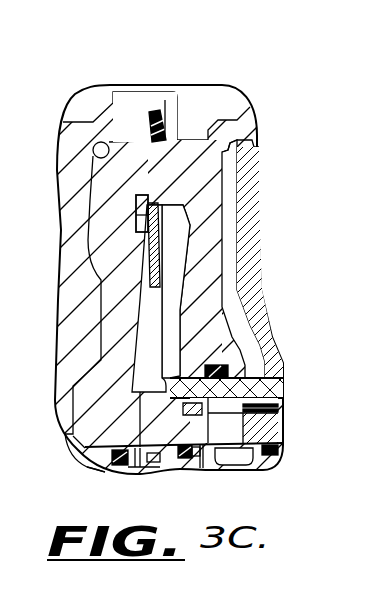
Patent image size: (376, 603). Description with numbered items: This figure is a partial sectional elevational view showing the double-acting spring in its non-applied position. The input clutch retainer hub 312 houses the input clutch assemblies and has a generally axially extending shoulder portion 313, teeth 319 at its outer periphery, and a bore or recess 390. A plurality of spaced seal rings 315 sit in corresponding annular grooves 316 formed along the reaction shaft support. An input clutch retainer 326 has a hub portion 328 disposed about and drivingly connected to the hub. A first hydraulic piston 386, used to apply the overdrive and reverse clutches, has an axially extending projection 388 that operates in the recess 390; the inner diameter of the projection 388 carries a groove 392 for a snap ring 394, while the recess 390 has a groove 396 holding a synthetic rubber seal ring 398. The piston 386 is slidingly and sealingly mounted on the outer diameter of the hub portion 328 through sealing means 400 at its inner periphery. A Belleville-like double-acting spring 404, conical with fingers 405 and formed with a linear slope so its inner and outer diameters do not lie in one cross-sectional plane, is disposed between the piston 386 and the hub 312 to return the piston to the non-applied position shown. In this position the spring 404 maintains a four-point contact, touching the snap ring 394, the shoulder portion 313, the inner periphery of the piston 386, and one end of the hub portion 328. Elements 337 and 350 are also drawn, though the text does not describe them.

The input clutch retainer hub 312 is at (88, 139).
The shoulder portion 313 is at (147, 248).
The seal rings 315 is at (127, 448).
The annular grooves 316 is at (146, 449).
The teeth 319 is at (130, 92).
The input clutch retainer 326 is at (248, 198).
The hub portion 328 is at (205, 467).
The seal 337 is at (166, 447).
The plates 350 is at (250, 408).
The first hydraulic piston 386 is at (222, 248).
The axially extending projection 388 is at (195, 168).
The recess 390 is at (92, 153).
The groove 392 is at (136, 200).
The snap ring 394 is at (140, 220).
The groove 396 is at (166, 128).
The seal ring 398 is at (153, 118).
The sealing means 400 is at (232, 369).
The double-acting spring 404 is at (148, 283).
The fingers 405 is at (160, 374).